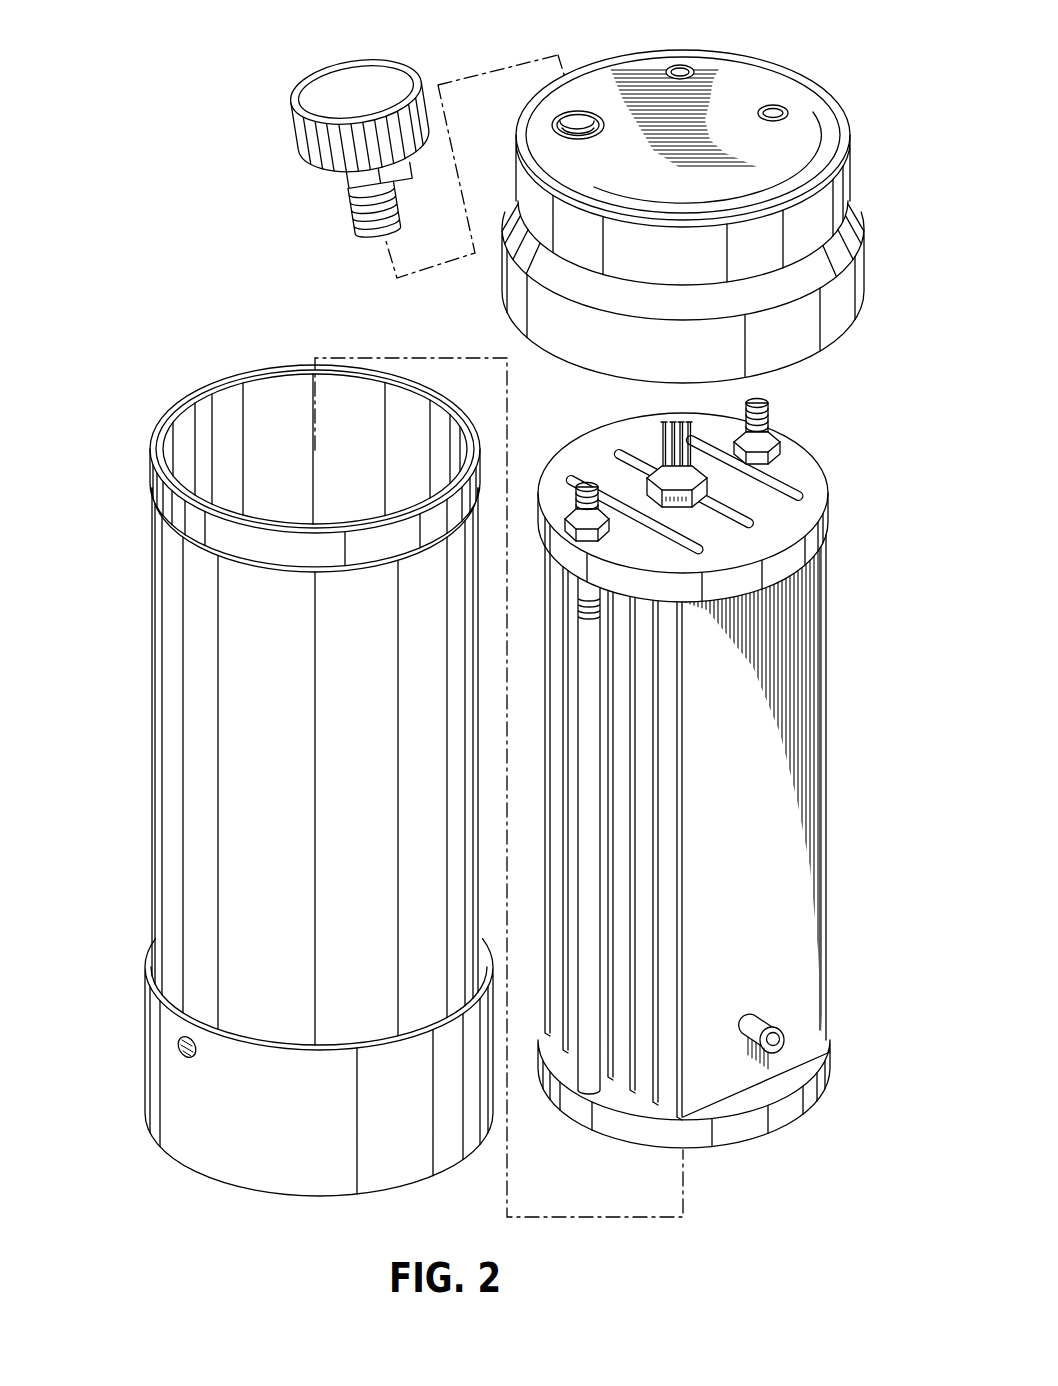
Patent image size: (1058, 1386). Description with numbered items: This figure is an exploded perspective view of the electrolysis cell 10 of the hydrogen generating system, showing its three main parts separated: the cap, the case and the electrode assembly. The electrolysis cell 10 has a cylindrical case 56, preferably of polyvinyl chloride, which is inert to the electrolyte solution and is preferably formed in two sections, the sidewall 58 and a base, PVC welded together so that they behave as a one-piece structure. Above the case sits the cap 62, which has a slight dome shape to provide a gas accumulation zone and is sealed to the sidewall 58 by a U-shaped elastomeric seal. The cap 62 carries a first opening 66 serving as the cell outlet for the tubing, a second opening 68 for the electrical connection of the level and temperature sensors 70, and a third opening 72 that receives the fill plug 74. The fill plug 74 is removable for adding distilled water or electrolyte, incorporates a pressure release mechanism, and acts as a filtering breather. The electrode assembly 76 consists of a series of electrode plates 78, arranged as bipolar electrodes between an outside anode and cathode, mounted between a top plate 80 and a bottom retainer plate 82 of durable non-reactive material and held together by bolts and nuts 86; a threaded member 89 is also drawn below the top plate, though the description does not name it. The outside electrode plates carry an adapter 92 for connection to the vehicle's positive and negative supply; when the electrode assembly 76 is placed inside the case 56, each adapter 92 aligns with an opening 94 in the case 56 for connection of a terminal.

The electrolysis cell 10 is at (195, 1150).
The case 56 is at (137, 612).
The sidewall 58 is at (190, 828).
The cap 62 is at (850, 185).
The first opening 66 is at (785, 112).
The second opening 68 is at (681, 70).
The level and temperature sensors 70 is at (705, 482).
The third opening 72 is at (590, 127).
The fill plug 74 is at (356, 180).
The electrode assembly 76 is at (840, 614).
The electrode plates 78 is at (807, 803).
The top plate 80 is at (813, 493).
The bottom retainer plate 82 is at (780, 1113).
The nuts 86 is at (586, 470).
The threaded rod 89 is at (585, 610).
The adapter 92 is at (767, 1012).
The openings 94 is at (178, 1046).